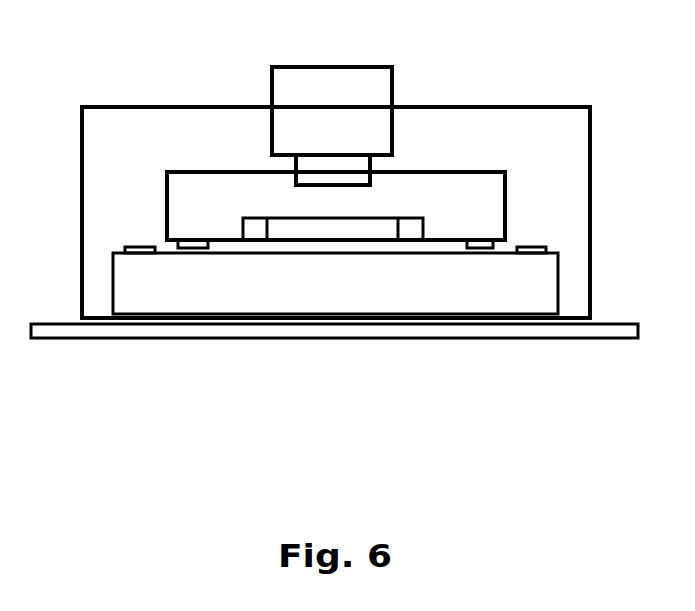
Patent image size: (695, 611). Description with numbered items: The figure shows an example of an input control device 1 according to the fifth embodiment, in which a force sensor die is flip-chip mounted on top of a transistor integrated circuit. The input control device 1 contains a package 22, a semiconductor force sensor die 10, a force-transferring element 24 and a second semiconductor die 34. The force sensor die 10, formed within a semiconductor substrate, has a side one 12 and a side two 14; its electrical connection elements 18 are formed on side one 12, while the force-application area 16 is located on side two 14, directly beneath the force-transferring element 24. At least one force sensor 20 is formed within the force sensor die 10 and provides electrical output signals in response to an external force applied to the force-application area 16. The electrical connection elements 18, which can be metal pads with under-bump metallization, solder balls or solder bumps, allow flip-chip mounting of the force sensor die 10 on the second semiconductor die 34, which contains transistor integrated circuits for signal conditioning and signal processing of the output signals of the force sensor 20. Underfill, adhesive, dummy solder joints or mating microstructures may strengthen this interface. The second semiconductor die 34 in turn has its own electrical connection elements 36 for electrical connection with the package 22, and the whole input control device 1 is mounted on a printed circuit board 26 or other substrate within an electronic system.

The input control device 1 is at (110, 31).
The semiconductor force sensor die 10 is at (488, 198).
The side one 12 is at (223, 243).
The side two 14 is at (227, 172).
The force-application area 16 is at (352, 170).
The electrical connection elements 18 is at (480, 253).
The force sensor 20 is at (255, 228).
The package 22 is at (182, 104).
The force-transferring element 24 is at (330, 88).
The printed circuit board 26 is at (417, 340).
The second semiconductor die 34 is at (327, 285).
The electrical connection elements 36 is at (532, 240).